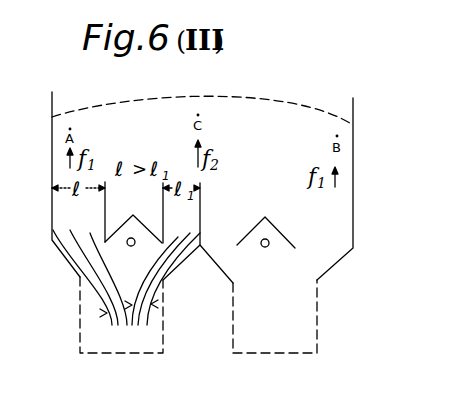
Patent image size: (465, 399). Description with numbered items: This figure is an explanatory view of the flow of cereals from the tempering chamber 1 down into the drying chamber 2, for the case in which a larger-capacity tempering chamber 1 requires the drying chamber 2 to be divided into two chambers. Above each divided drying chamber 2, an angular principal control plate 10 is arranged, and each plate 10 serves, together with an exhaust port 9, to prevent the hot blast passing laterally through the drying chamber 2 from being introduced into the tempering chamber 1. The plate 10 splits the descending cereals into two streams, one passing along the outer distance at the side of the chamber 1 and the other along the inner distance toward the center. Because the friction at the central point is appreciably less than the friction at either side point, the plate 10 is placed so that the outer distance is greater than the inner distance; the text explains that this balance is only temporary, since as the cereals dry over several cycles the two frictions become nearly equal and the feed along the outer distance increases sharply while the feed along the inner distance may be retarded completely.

The tempering chamber 1 is at (353, 200).
The drying chamber 2 is at (78, 333).
The exhaust port 9 is at (128, 245).
The principal control plate 10 is at (147, 225).